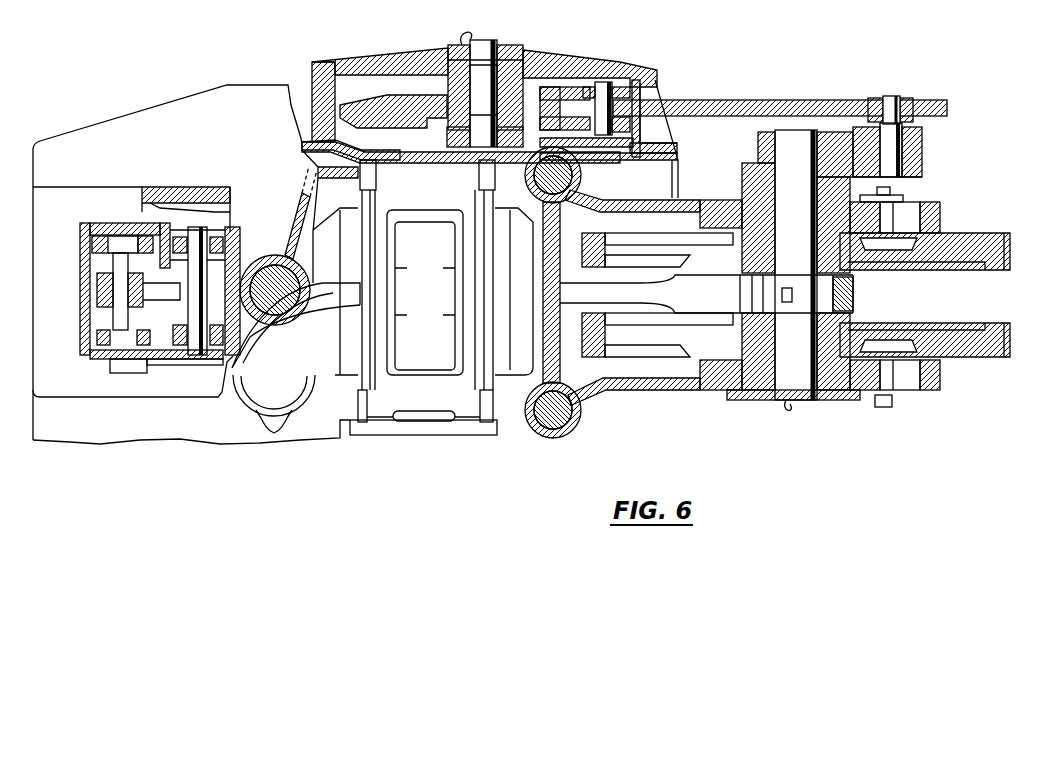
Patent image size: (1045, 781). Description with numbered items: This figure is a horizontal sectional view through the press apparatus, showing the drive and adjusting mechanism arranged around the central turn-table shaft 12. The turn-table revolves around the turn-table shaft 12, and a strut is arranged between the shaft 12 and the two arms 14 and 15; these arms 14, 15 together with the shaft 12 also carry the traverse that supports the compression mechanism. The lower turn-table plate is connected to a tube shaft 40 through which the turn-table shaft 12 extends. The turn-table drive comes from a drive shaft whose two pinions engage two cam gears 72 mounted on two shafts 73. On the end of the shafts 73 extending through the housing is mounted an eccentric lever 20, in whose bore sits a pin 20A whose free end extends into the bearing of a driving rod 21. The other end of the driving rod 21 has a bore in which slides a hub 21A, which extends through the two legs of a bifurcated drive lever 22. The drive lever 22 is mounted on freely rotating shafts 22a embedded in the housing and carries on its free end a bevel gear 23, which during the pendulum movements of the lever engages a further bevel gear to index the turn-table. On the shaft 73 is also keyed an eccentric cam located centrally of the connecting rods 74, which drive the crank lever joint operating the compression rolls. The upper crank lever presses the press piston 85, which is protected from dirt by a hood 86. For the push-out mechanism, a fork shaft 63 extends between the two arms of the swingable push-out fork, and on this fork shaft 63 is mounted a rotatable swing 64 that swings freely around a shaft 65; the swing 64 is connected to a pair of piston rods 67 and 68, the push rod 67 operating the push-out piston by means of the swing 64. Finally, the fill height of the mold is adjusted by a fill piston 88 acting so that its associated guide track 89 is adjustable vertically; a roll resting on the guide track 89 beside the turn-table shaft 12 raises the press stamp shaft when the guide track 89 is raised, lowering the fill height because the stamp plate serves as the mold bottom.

The turn-table shaft 12 is at (285, 291).
The arm 14 is at (582, 173).
The arm 15 is at (557, 438).
The eccentric lever 20 is at (918, 162).
The pin 20A is at (920, 142).
The driving rod 21 is at (760, 110).
The hub 21A is at (617, 74).
The bifurcated drive lever 22 is at (530, 95).
The shafts 22a is at (476, 87).
The bevel gear 23 is at (368, 106).
The tube shaft 40 is at (283, 254).
The fork shaft 63 is at (95, 288).
The swing 64 is at (148, 300).
The shaft 65 is at (196, 303).
The piston rod 67 is at (167, 218).
The piston rod 68 is at (180, 363).
The cam gears 72 is at (988, 242).
The shafts 73 is at (783, 329).
The connecting rods 74 is at (585, 298).
The press piston 85 is at (437, 292).
The hood 86 is at (467, 412).
The fill piston 88 is at (292, 394).
The guide track 89 is at (323, 356).